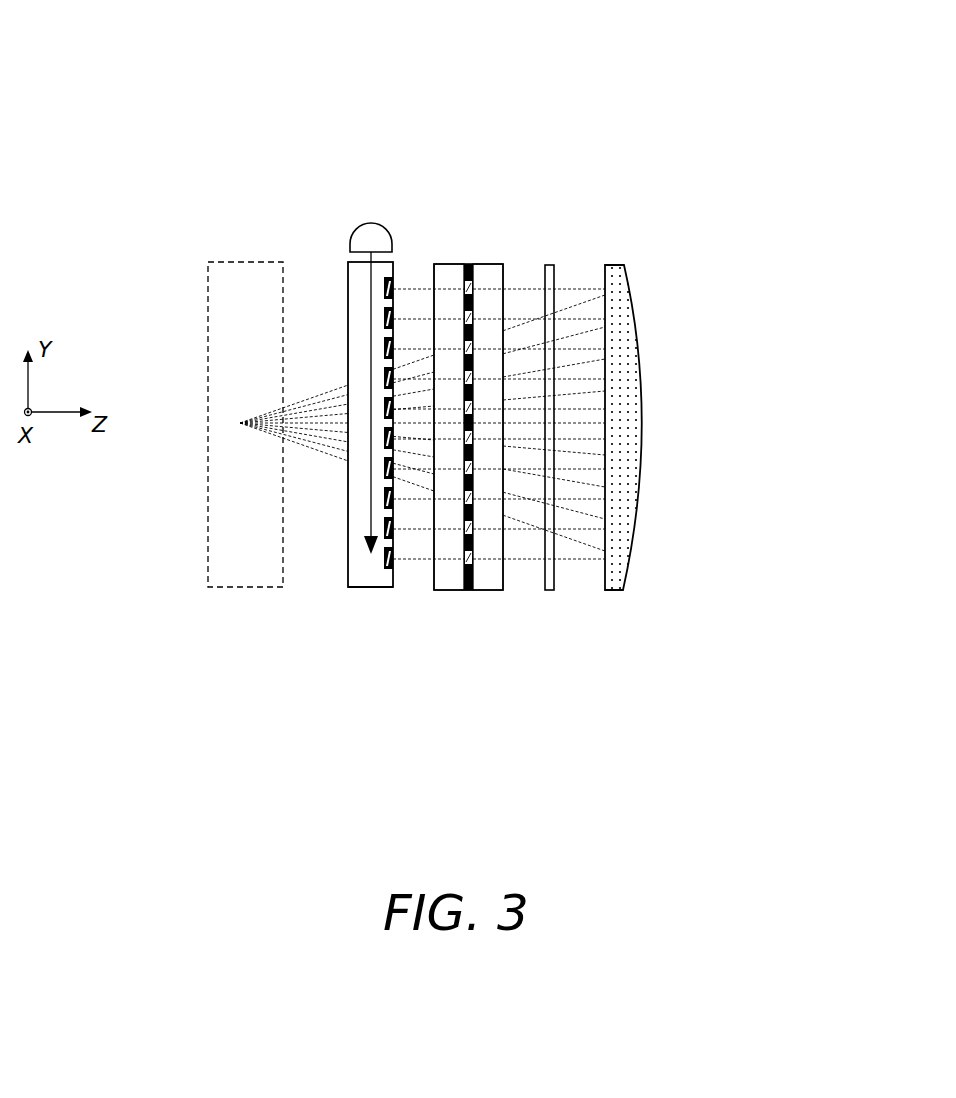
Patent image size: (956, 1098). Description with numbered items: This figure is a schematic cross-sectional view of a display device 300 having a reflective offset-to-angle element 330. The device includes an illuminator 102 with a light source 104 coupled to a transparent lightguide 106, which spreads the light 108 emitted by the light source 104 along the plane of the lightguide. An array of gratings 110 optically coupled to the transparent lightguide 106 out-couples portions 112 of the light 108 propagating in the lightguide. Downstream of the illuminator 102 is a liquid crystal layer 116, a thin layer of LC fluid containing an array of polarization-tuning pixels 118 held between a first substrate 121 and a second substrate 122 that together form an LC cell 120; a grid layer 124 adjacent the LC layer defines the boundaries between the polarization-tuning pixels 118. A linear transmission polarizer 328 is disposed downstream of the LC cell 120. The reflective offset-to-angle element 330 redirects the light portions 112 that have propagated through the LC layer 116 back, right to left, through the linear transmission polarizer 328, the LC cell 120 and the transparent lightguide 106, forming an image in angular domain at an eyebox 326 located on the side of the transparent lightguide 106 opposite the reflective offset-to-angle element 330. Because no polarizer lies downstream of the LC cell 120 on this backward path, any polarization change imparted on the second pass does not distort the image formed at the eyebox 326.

The display device 300 is at (523, 102).
The eyebox 326 is at (268, 527).
The illuminator 102 is at (332, 571).
The light source 104 is at (370, 233).
The transparent lightguide 106 is at (368, 574).
The light 108 is at (371, 297).
The array of gratings 110 is at (384, 347).
The light portions 112 is at (313, 433).
The liquid crystal layer 116 is at (462, 608).
The polarization-tuning pixels 118 is at (475, 322).
The LC cell 120 is at (537, 700).
The first substrate 121 is at (449, 267).
The second substrate 122 is at (503, 576).
The grid layer 124 is at (474, 487).
The linear transmission polarizer 328 is at (550, 266).
The reflective offset-to-angle element 330 is at (630, 417).